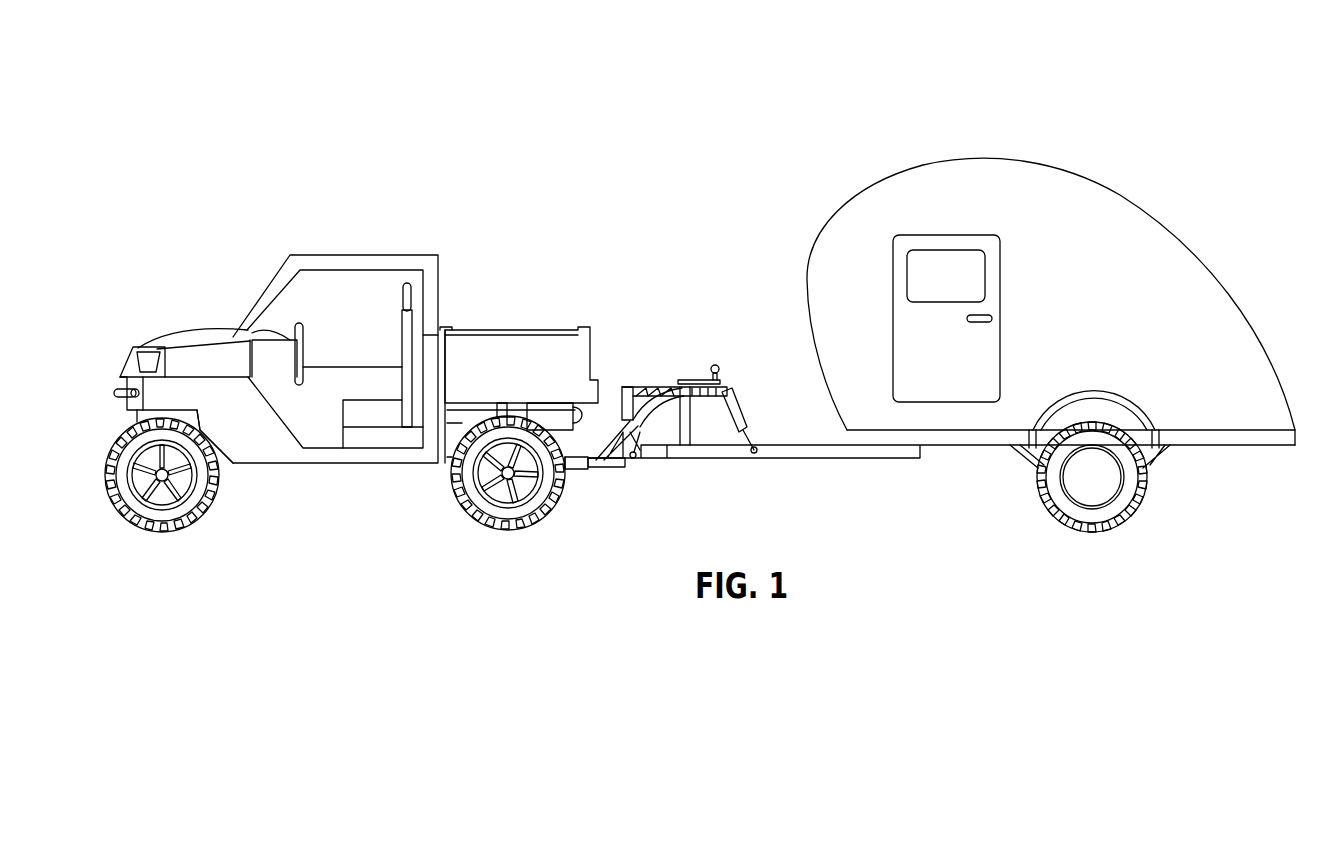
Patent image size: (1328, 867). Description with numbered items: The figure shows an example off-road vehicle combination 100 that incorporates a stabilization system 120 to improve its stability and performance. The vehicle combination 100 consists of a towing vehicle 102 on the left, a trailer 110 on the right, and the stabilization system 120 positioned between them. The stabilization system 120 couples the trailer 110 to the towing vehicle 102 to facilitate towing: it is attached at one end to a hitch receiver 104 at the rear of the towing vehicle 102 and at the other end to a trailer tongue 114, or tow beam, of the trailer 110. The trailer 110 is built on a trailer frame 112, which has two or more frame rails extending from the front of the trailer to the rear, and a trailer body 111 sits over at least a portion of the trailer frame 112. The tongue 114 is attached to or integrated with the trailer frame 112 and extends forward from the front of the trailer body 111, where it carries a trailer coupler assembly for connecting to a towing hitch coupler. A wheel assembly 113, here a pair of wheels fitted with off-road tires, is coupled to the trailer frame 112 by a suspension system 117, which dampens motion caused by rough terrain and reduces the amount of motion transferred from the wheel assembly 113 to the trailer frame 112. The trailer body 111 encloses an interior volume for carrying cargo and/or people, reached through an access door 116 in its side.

The vehicle combination 100 is at (221, 119).
The towing vehicle 102 is at (345, 234).
The hitch receiver 104 is at (581, 469).
The trailer 110 is at (825, 142).
The trailer body 111 is at (1212, 259).
The trailer frame 112 is at (938, 459).
The wheel assembly 113 is at (1145, 497).
The trailer tongue 114 is at (797, 443).
The access door 116 is at (928, 235).
The suspension system 117 is at (1031, 468).
The stabilization system 120 is at (683, 351).